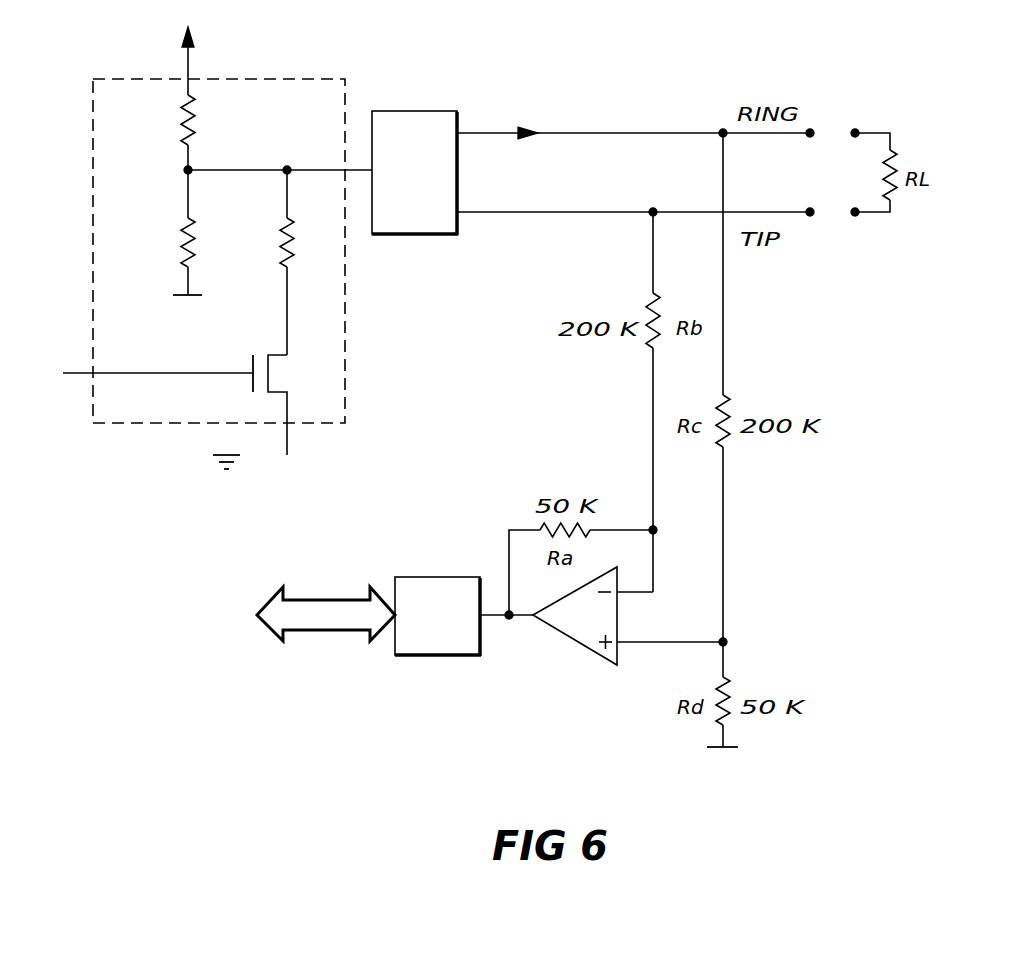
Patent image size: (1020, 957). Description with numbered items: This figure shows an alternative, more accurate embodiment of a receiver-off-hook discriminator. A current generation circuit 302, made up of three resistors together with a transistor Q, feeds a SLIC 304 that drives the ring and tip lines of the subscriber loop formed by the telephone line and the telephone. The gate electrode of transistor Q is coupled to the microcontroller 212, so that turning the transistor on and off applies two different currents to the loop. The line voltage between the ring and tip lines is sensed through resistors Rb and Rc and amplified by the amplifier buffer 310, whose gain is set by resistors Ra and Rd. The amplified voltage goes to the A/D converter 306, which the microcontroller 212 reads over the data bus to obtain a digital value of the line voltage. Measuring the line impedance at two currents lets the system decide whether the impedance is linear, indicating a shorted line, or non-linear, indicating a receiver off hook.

The current generation circuit 302 is at (333, 372).
The SLIC 304 is at (384, 111).
The A/D converter 306 is at (405, 577).
The amplifier buffer 310 is at (571, 640).
The microcontroller 212 is at (215, 612).